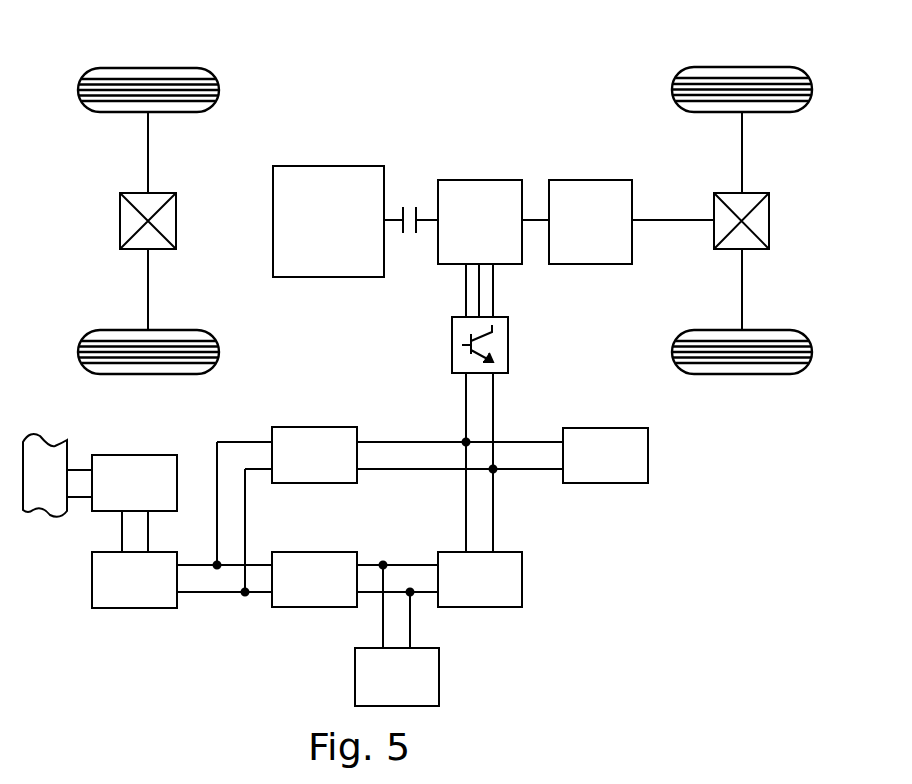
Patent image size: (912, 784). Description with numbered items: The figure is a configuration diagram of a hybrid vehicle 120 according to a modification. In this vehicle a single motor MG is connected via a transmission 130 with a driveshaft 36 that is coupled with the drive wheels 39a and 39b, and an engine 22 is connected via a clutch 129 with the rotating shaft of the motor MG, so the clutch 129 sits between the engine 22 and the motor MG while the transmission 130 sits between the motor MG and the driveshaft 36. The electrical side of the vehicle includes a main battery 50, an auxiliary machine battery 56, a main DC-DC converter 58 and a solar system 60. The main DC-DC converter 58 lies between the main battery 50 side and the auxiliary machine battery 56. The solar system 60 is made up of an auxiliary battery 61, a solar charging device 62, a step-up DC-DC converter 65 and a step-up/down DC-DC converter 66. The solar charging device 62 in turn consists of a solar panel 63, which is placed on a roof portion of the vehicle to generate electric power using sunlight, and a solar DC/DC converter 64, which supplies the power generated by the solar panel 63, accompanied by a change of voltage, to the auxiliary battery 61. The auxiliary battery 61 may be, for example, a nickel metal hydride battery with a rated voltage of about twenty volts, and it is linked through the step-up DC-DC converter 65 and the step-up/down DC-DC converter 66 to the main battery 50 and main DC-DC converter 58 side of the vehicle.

The hybrid vehicle 120 is at (571, 54).
The drive wheel 39a is at (740, 67).
The drive wheel 39b is at (741, 374).
The driveshaft 36 is at (688, 219).
The engine 22 is at (327, 165).
The clutch 129 is at (411, 204).
The motor MG is at (480, 179).
The transmission 130 is at (592, 179).
The main battery 50 is at (611, 427).
The solar system 60 is at (286, 371).
The step-up DC-DC converter 65 is at (322, 426).
The step-up/down DC-DC converter 66 is at (322, 551).
The main DC-DC converter 58 is at (522, 578).
The auxiliary machine battery 56 is at (439, 676).
The solar charging device 62 is at (190, 439).
The solar panel 63 is at (47, 433).
The solar DC/DC converter 64 is at (143, 454).
The auxiliary battery 61 is at (92, 578).